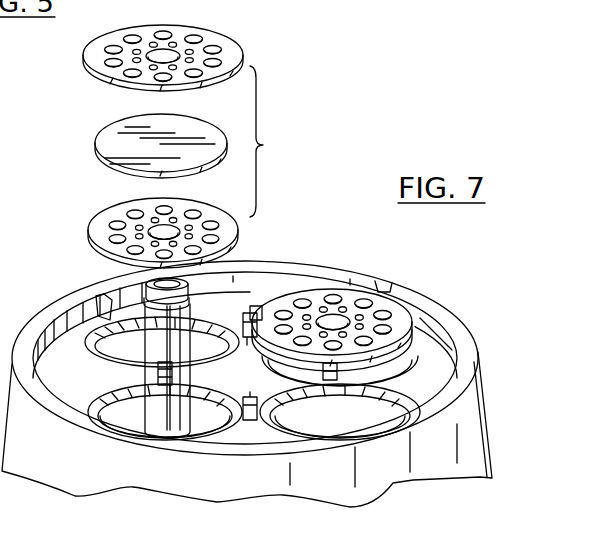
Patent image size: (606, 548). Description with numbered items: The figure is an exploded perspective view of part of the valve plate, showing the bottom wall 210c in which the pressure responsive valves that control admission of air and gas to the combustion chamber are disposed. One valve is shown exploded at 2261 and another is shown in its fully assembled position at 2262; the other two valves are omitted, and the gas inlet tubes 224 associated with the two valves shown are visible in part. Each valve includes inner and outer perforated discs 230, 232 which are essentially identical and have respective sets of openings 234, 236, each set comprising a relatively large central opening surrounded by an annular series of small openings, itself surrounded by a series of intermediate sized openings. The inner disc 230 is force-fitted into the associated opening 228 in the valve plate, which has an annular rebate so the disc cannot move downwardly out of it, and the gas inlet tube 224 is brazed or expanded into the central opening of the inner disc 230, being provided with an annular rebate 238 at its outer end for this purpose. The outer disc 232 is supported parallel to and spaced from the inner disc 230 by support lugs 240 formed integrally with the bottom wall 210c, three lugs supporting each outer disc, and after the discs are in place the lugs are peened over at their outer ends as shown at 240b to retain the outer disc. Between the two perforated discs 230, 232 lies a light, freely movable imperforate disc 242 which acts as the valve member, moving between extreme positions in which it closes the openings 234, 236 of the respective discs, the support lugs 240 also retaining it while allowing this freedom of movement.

The bottom wall 210c is at (440, 368).
The gas inlet tube 224 is at (158, 340).
The valve 2261 is at (285, 141).
The valve 2262 is at (360, 285).
The opening 228 is at (290, 432).
The inner perforated disc 230 is at (161, 233).
The outer perforated disc 232 is at (149, 45).
The openings 234 is at (92, 233).
The openings 236 is at (218, 60).
The annular rebate 238 is at (130, 277).
The support lugs 240 is at (247, 341).
The peened over outer end 240b is at (257, 313).
The imperforate disc 242 is at (100, 145).